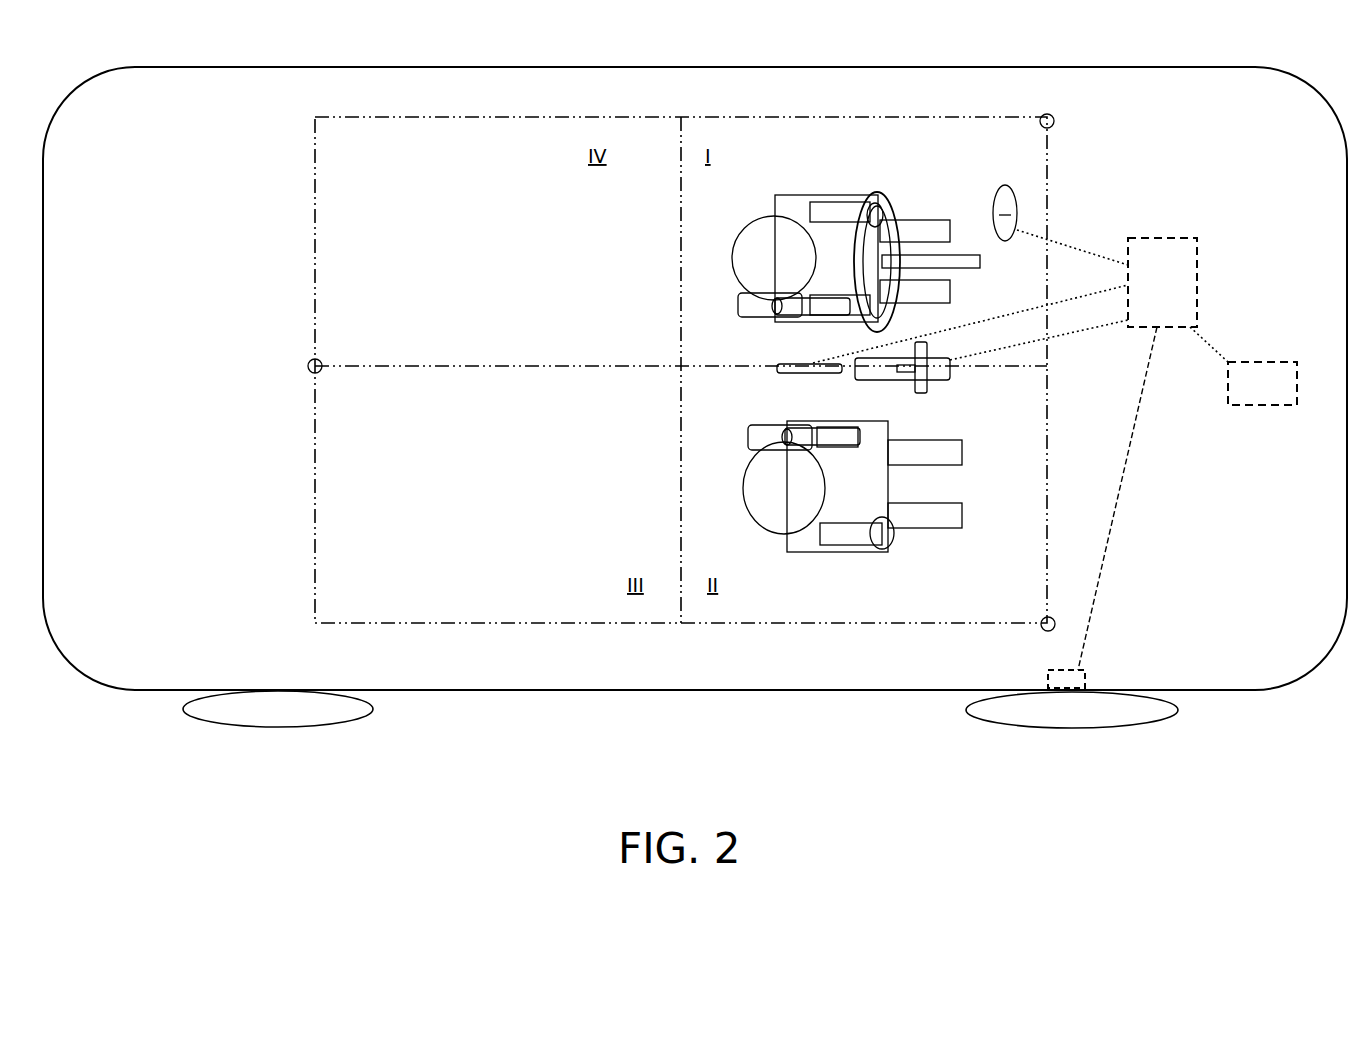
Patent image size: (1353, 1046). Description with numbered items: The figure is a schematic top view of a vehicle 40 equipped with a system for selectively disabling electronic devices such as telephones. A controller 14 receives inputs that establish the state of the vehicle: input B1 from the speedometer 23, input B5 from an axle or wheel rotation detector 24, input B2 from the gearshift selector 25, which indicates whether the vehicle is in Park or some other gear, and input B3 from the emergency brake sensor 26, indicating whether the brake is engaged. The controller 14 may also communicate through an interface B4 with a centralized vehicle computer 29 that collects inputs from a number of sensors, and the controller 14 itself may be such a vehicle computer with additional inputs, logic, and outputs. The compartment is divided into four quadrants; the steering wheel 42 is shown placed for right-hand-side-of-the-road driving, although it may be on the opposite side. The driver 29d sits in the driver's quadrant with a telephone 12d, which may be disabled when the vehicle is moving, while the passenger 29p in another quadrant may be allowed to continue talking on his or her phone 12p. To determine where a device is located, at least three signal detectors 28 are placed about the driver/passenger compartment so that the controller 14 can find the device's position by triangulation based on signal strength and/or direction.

The vehicle 40 is at (880, 68).
The signal detectors 28 is at (310, 370).
The speedometer 23 is at (1003, 203).
The driver 29d is at (797, 207).
The telephone of driver 12d is at (750, 310).
The steering wheel 42 is at (893, 200).
The passenger 29p is at (800, 542).
The phone of passenger 12p is at (758, 442).
The emergency brake sensor 26 is at (787, 370).
The gearshift selector 25 is at (940, 377).
The controller 14 is at (1162, 282).
The centralized vehicle computer 29 is at (1262, 383).
The axle or wheel rotation detector 24 is at (1077, 677).
The input from speedometer B1 is at (1073, 247).
The input from gearshift selector B2 is at (1068, 333).
The input from emergency brake sensor B3 is at (850, 353).
The interface with centralized vehicle computer B4 is at (1213, 338).
The input from axle or wheel rotation detector B5 is at (1130, 457).